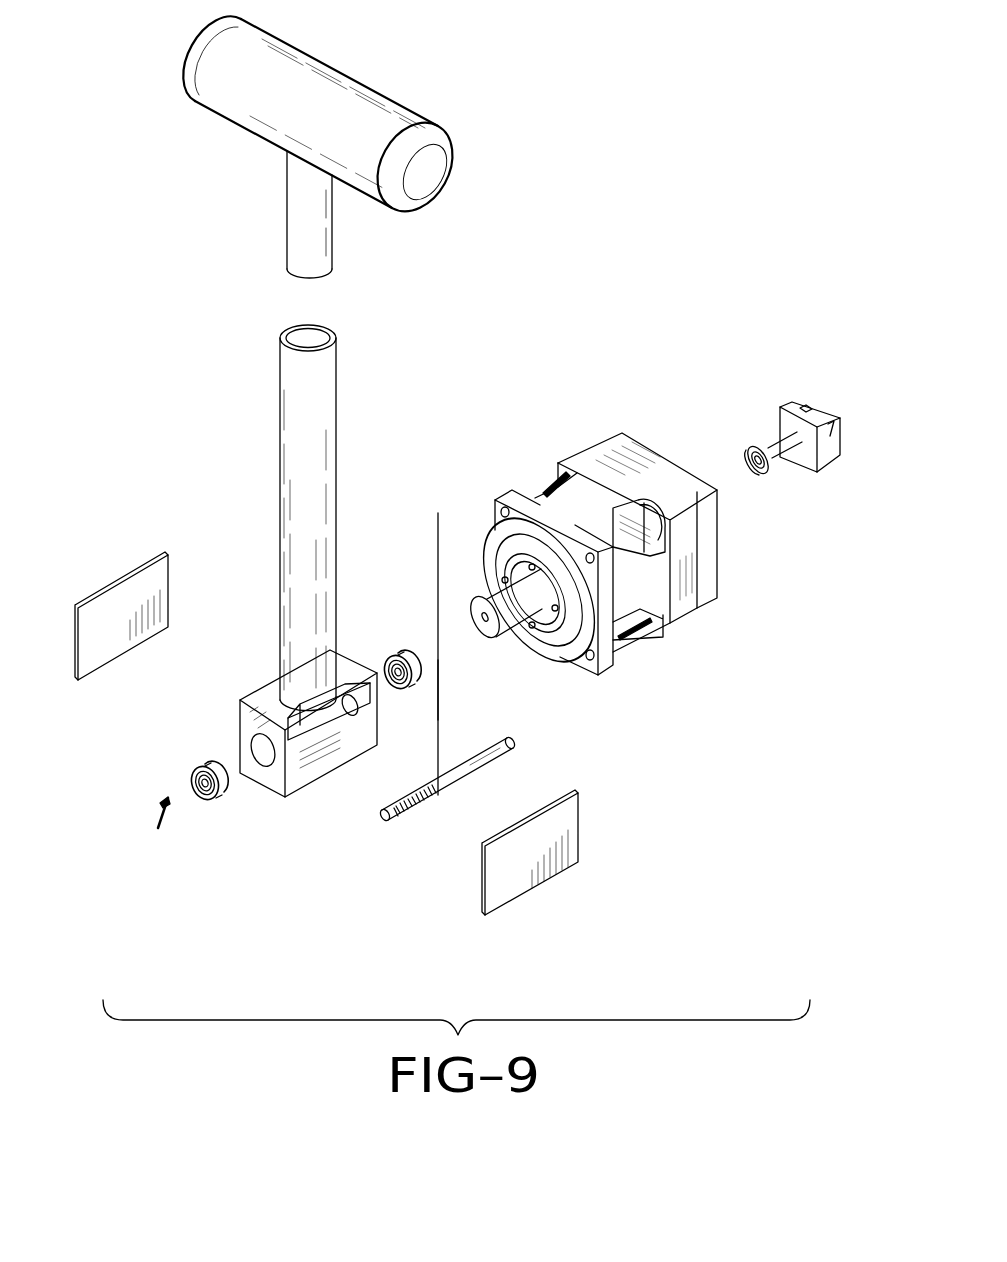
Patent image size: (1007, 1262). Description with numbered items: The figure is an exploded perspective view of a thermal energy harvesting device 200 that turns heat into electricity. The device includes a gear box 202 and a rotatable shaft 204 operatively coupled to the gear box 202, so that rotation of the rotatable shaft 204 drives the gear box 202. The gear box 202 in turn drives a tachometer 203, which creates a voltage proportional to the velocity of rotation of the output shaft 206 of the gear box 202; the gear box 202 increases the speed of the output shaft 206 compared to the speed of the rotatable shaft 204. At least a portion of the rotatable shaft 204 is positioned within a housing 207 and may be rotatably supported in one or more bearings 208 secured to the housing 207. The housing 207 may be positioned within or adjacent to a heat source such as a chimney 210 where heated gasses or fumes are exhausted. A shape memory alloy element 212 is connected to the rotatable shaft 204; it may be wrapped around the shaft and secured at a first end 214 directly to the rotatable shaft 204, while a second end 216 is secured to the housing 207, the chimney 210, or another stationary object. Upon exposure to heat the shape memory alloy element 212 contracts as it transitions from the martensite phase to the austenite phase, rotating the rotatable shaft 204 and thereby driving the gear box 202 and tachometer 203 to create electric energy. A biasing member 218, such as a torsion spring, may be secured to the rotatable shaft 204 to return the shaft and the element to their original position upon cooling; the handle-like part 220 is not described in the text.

The thermal energy harvesting device 200 is at (685, 237).
The gear box 202 is at (588, 455).
The tachometer 203 is at (832, 438).
The rotatable shaft 204 is at (497, 762).
The output shaft 206 is at (780, 453).
The housing 207 is at (303, 797).
The bearings 208 is at (390, 656).
The chimney 210 is at (282, 408).
The shape memory alloy element 212 is at (440, 692).
The first end 214 is at (397, 818).
The second end 216 is at (438, 513).
The biasing member 218 is at (160, 800).
The handle 220 is at (427, 200).